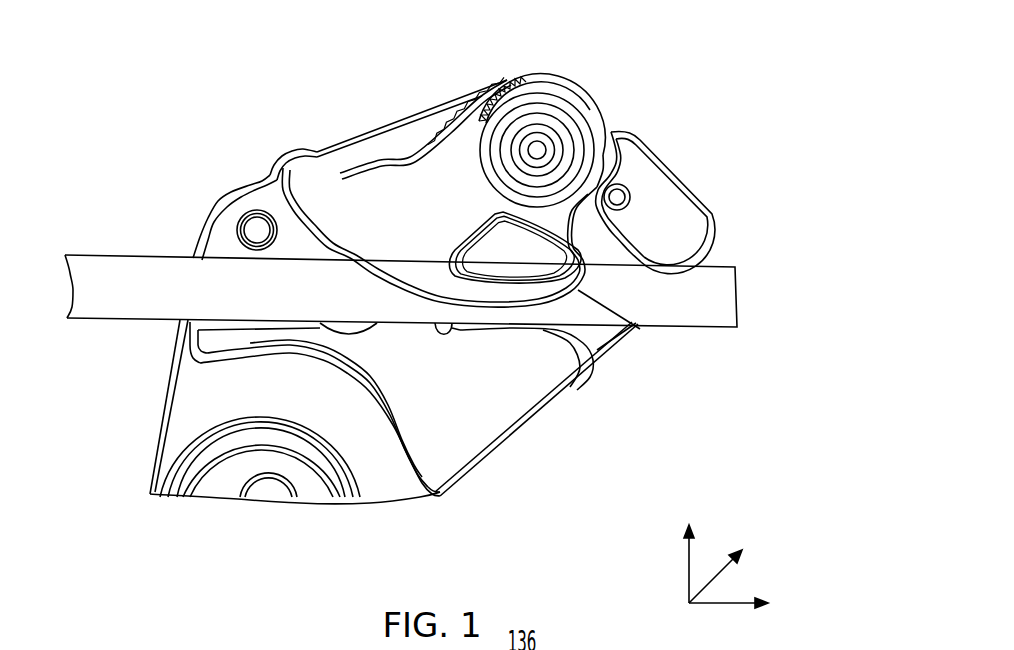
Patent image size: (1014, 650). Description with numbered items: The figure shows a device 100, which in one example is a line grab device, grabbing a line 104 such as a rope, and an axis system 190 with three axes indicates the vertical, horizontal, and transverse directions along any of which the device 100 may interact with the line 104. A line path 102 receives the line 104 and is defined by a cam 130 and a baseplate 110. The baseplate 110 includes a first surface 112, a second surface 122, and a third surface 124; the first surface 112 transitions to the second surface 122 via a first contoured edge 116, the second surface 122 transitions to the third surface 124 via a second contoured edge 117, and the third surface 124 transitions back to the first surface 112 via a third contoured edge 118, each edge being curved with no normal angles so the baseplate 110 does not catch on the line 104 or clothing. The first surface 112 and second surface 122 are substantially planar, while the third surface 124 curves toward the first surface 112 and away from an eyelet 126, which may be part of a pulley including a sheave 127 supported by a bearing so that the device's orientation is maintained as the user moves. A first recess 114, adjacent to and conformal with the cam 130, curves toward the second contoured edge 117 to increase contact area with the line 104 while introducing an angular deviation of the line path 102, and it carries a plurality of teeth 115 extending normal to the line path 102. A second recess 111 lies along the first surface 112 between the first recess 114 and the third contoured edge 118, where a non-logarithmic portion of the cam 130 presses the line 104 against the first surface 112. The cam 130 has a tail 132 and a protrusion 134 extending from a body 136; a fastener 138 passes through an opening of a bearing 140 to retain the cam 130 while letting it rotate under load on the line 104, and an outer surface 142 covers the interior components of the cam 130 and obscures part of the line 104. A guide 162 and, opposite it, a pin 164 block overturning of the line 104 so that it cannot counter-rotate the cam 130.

The device 100 is at (706, 72).
The line path 102 is at (216, 254).
The line 104 is at (191, 300).
The baseplate 110 is at (448, 398).
The second recess 111 is at (347, 330).
The first surface 112 is at (545, 331).
The first recess 114 is at (497, 338).
The plurality of teeth 115 is at (433, 338).
The first contoured edge 116 is at (597, 347).
The second contoured edge 117 is at (441, 493).
The third contoured edge 118 is at (188, 343).
The second surface 122 is at (512, 442).
The third surface 124 is at (243, 363).
The eyelet 126 is at (273, 488).
The sheave 127 is at (165, 494).
The cam 130 is at (371, 172).
The tail 132 is at (299, 147).
The protrusion 134 is at (640, 329).
The body 136 is at (533, 73).
The fastener 138 is at (548, 138).
The bearing 140 is at (548, 110).
The outer surface 142 is at (419, 229).
The guide 162 is at (692, 200).
The pin 164 is at (243, 213).
The axis system 190 is at (762, 510).